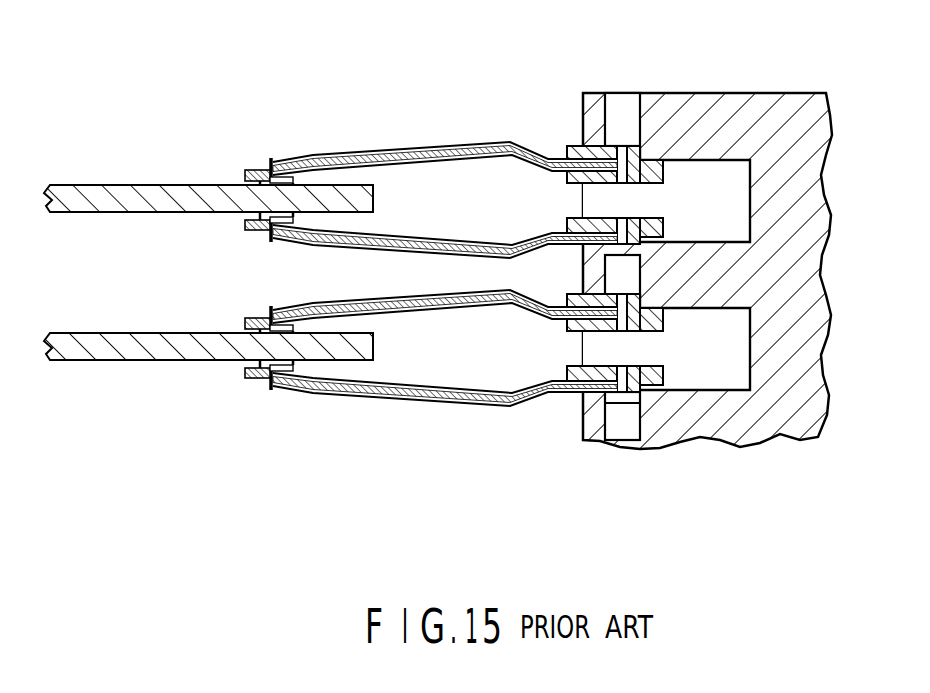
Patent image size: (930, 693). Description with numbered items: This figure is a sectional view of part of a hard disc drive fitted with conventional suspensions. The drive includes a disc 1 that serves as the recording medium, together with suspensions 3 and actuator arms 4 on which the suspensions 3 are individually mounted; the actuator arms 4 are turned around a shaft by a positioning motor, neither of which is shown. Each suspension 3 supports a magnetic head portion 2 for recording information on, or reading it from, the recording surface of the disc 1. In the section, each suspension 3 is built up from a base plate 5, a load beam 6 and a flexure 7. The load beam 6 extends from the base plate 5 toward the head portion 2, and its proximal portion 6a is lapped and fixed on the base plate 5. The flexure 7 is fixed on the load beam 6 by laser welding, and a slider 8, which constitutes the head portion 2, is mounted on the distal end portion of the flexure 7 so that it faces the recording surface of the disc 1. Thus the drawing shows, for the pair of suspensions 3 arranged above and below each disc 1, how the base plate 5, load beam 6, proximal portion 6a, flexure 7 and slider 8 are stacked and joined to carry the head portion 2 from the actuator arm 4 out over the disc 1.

The disc 1 is at (101, 192).
The magnetic head portion 2 is at (330, 282).
The suspension 3 is at (393, 282).
The actuator arm 4 is at (679, 93).
The base plate 5 is at (566, 175).
The load beam 6 is at (421, 148).
The proximal portion of the load beam 6a is at (574, 158).
The flexure 7 is at (266, 165).
The slider 8 is at (255, 180).